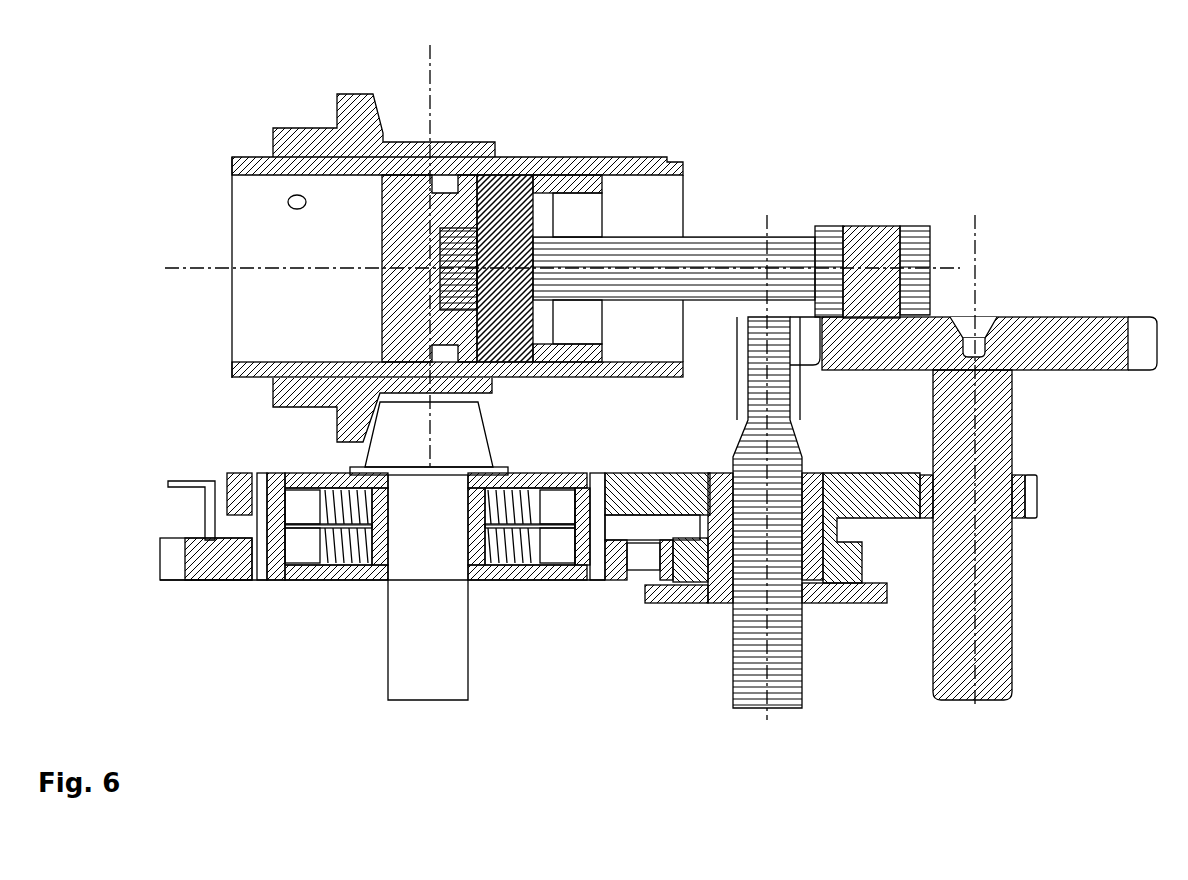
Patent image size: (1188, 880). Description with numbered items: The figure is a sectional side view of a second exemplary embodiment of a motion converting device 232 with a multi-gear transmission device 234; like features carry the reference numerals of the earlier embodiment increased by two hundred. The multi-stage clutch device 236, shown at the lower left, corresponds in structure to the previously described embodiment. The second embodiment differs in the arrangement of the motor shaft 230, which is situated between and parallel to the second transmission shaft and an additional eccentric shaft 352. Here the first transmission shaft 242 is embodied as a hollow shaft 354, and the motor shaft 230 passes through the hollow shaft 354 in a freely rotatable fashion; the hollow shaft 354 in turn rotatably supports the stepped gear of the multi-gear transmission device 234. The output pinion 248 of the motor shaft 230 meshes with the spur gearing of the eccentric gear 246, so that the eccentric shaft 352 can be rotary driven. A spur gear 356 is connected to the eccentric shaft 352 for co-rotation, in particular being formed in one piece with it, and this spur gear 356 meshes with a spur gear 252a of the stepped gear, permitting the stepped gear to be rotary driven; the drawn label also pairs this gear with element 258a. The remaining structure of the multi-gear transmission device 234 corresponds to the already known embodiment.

The motor shaft 230 is at (743, 660).
The motion converting device 232 is at (958, 150).
The multi-gear transmission device 234 is at (627, 460).
The multi-stage clutch device 236 is at (322, 613).
The first transmission shaft 242 is at (861, 684).
The eccentric gear 246 is at (1052, 318).
The output pinion 248 is at (740, 318).
The spur gear 252a is at (913, 613).
The bearing 258a is at (878, 513).
The eccentric shaft 352 is at (992, 398).
The hollow shaft 354 is at (817, 605).
The spur gear 356 is at (1038, 497).